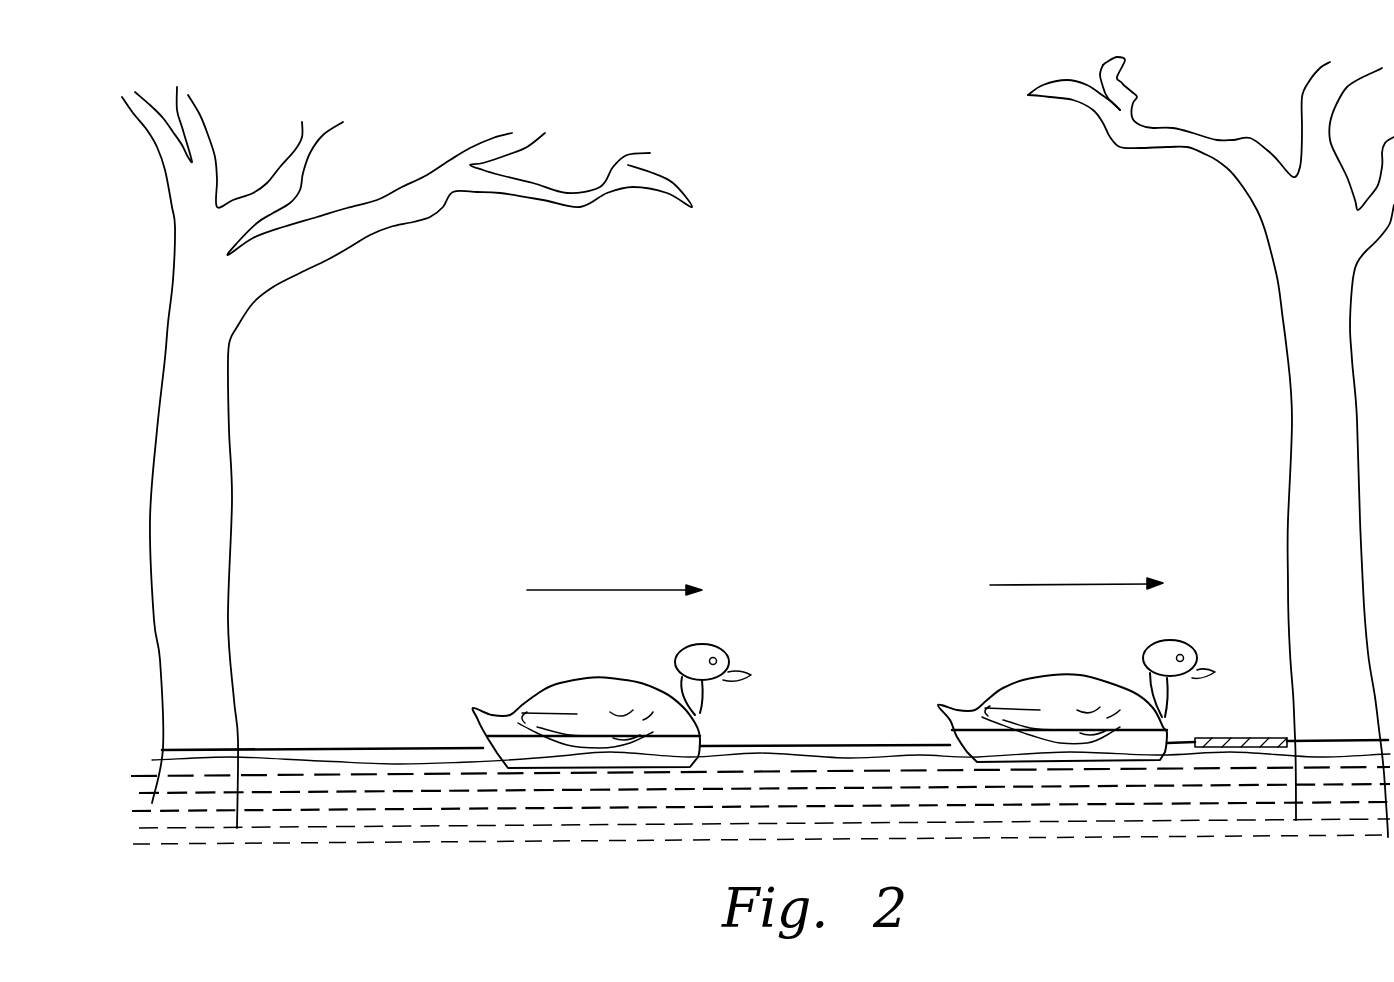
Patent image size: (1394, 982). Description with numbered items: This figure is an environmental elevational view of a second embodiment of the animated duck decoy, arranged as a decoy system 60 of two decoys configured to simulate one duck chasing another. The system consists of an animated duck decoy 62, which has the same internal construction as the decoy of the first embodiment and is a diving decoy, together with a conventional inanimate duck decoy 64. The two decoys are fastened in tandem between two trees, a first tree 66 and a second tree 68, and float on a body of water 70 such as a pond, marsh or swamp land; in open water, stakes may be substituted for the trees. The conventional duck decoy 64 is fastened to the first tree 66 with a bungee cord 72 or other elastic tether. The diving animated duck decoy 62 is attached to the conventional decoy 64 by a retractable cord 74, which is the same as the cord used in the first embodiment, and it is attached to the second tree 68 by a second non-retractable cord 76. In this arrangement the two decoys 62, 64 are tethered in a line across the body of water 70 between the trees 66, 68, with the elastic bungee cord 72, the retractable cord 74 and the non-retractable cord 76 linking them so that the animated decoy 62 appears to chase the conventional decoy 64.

The decoy system 60 is at (820, 478).
The animated duck decoy 62 is at (538, 663).
The conventional inanimate duck decoy 64 is at (1015, 645).
The first tree 66 is at (1346, 507).
The second tree 68 is at (212, 491).
The body of water 70 is at (488, 855).
The bungee cord 72 is at (1257, 730).
The retractable cord 74 is at (823, 740).
The second non-retractable cord 76 is at (354, 740).